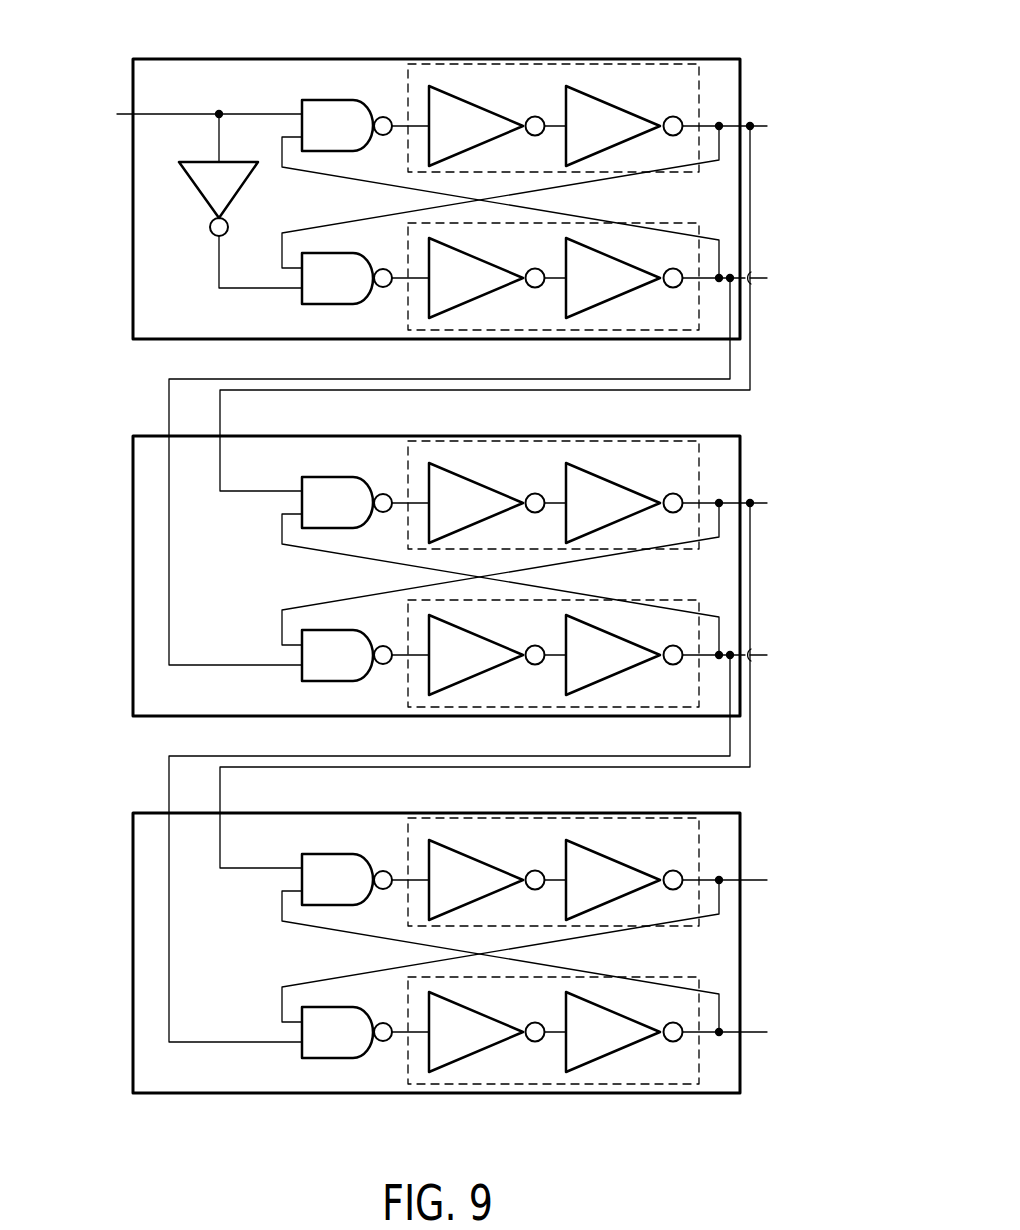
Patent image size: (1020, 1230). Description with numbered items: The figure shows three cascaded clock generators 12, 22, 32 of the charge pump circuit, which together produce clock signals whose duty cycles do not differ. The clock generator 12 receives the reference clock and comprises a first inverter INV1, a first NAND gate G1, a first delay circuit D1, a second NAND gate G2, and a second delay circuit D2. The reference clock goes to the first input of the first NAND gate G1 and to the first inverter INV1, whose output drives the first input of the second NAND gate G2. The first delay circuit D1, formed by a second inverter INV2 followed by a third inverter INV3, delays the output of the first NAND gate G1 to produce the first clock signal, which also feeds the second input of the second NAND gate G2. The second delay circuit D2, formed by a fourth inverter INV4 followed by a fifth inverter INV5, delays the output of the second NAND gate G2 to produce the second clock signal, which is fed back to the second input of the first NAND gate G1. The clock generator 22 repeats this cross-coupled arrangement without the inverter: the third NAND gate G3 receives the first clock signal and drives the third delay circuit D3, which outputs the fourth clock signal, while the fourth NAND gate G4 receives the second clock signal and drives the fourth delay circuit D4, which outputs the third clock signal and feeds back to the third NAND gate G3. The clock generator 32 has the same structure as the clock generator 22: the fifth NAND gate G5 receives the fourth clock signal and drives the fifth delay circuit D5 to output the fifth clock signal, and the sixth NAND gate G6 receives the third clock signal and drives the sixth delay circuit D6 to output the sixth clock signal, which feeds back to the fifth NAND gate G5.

The clock generator 12 is at (448, 197).
The clock generator 22 is at (490, 577).
The clock generator 32 is at (490, 952).
The first delay circuit D1 is at (553, 95).
The second delay circuit D2 is at (553, 299).
The third delay circuit D3 is at (530, 439).
The fourth delay circuit D4 is at (528, 708).
The fifth delay circuit D5 is at (530, 816).
The sixth delay circuit D6 is at (528, 1085).
The first NAND gate G1 is at (347, 125).
The second NAND gate G2 is at (347, 278).
The third NAND gate G3 is at (347, 502).
The fourth NAND gate G4 is at (347, 655).
The fifth NAND gate G5 is at (347, 879).
The sixth NAND gate G6 is at (347, 1032).
The first inverter INV1 is at (210, 183).
The second inverter INV2 is at (487, 126).
The third inverter INV3 is at (624, 126).
The fourth inverter INV4 is at (487, 278).
The fifth inverter INV5 is at (624, 278).